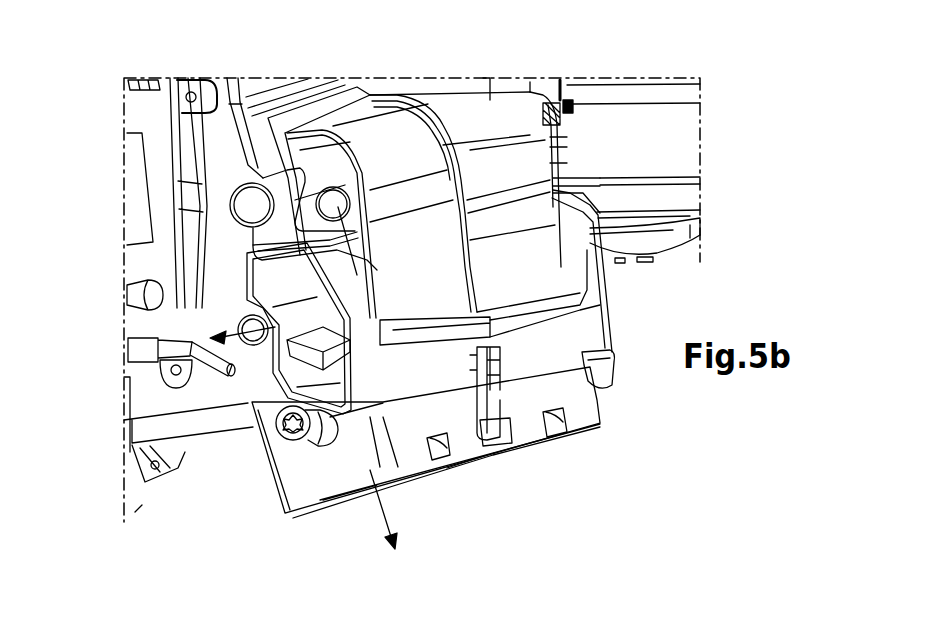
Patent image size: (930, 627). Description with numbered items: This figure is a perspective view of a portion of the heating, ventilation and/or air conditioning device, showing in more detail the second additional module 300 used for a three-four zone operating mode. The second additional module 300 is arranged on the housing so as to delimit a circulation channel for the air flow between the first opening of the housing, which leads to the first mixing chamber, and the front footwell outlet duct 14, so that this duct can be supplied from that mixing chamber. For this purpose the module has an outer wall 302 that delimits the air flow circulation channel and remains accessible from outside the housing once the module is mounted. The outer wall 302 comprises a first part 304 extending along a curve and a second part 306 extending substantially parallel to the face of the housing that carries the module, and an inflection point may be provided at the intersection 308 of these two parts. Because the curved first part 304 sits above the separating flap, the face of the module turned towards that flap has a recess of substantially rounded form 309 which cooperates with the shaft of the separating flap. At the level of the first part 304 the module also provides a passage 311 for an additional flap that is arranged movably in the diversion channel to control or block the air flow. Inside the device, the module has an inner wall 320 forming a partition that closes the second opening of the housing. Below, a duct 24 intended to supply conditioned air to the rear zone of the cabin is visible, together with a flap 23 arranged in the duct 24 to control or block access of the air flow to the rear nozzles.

The front footwell outlet duct 14 is at (288, 274).
The flap 23 is at (277, 430).
The duct 24 is at (333, 511).
The second additional module 300 is at (434, 179).
The outer wall 302 is at (483, 112).
The first part 304 is at (367, 137).
The second part 306 is at (547, 257).
The intersection 308 is at (557, 182).
The recess of substantially rounded form 309 is at (230, 197).
The passage 311 is at (360, 275).
The inner wall 320 is at (297, 377).